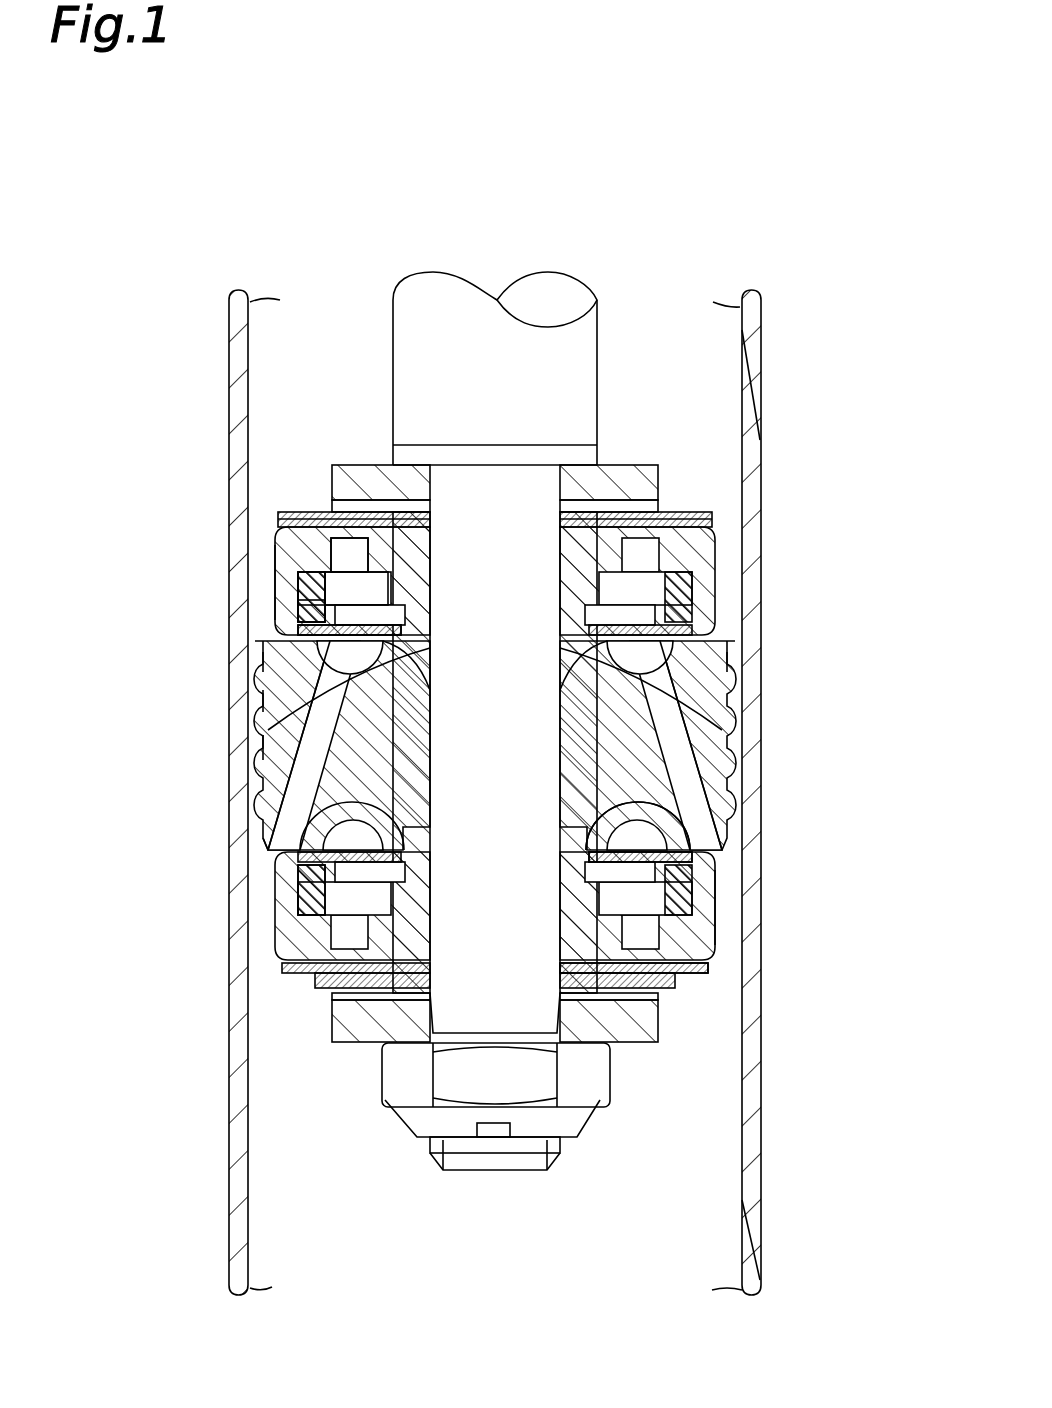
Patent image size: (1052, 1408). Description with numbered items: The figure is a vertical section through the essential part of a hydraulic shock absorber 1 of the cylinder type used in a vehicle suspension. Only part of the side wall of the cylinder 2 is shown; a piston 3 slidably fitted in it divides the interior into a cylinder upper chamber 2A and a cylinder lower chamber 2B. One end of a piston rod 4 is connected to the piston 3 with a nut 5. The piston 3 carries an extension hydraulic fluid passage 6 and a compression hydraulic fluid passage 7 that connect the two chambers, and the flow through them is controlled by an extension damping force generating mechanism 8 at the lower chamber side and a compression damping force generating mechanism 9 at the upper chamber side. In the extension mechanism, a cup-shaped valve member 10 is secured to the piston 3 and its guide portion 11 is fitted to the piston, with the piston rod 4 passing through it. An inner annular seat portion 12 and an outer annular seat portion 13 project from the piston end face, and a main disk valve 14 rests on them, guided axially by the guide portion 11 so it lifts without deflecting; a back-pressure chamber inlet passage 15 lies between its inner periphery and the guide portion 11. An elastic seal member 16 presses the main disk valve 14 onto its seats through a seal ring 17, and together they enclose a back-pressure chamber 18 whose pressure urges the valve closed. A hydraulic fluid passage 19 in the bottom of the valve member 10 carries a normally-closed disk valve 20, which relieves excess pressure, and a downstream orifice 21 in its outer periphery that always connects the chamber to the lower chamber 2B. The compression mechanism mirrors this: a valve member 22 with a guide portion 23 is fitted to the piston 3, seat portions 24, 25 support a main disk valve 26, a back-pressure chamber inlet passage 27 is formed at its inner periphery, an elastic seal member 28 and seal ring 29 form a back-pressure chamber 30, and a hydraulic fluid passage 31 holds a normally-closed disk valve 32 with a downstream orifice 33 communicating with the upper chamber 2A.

The hydraulic shock absorber 1 is at (708, 248).
The cylinder 2 is at (753, 343).
The cylinder upper chamber 2A is at (707, 393).
The cylinder lower chamber 2B is at (680, 1220).
The piston 3 is at (690, 712).
The piston rod 4 is at (447, 300).
The nut 5 is at (417, 1123).
The extension hydraulic fluid passage 6 is at (727, 676).
The compression hydraulic fluid passage 7 is at (303, 778).
The extension damping force generating mechanism 8 is at (720, 903).
The compression damping force generating mechanism 9 is at (265, 592).
The valve member 10 is at (700, 925).
The guide portion 11 is at (275, 840).
The seat portion 12 is at (690, 806).
The seat portion 13 is at (717, 847).
The main disk valve 14 is at (700, 850).
The back-pressure chamber inlet passage 15 is at (610, 828).
The elastic seal member 16 is at (700, 968).
The seal ring 17 is at (690, 975).
The back-pressure chamber 18 is at (727, 903).
The hydraulic fluid passage 19 is at (350, 930).
The disk valve 20 is at (307, 972).
The downstream orifice 21 is at (300, 972).
The valve member 22 is at (290, 540).
The guide portion 23 is at (350, 723).
The seat portion 24 is at (257, 697).
The seat portion 25 is at (255, 660).
The main disk valve 26 is at (300, 630).
The back-pressure chamber inlet passage 27 is at (347, 600).
The elastic seal member 28 is at (300, 615).
The seal ring 29 is at (395, 600).
The back-pressure chamber 30 is at (300, 592).
The hydraulic fluid passage 31 is at (655, 552).
The disk valve 32 is at (690, 522).
The downstream orifice 33 is at (717, 537).